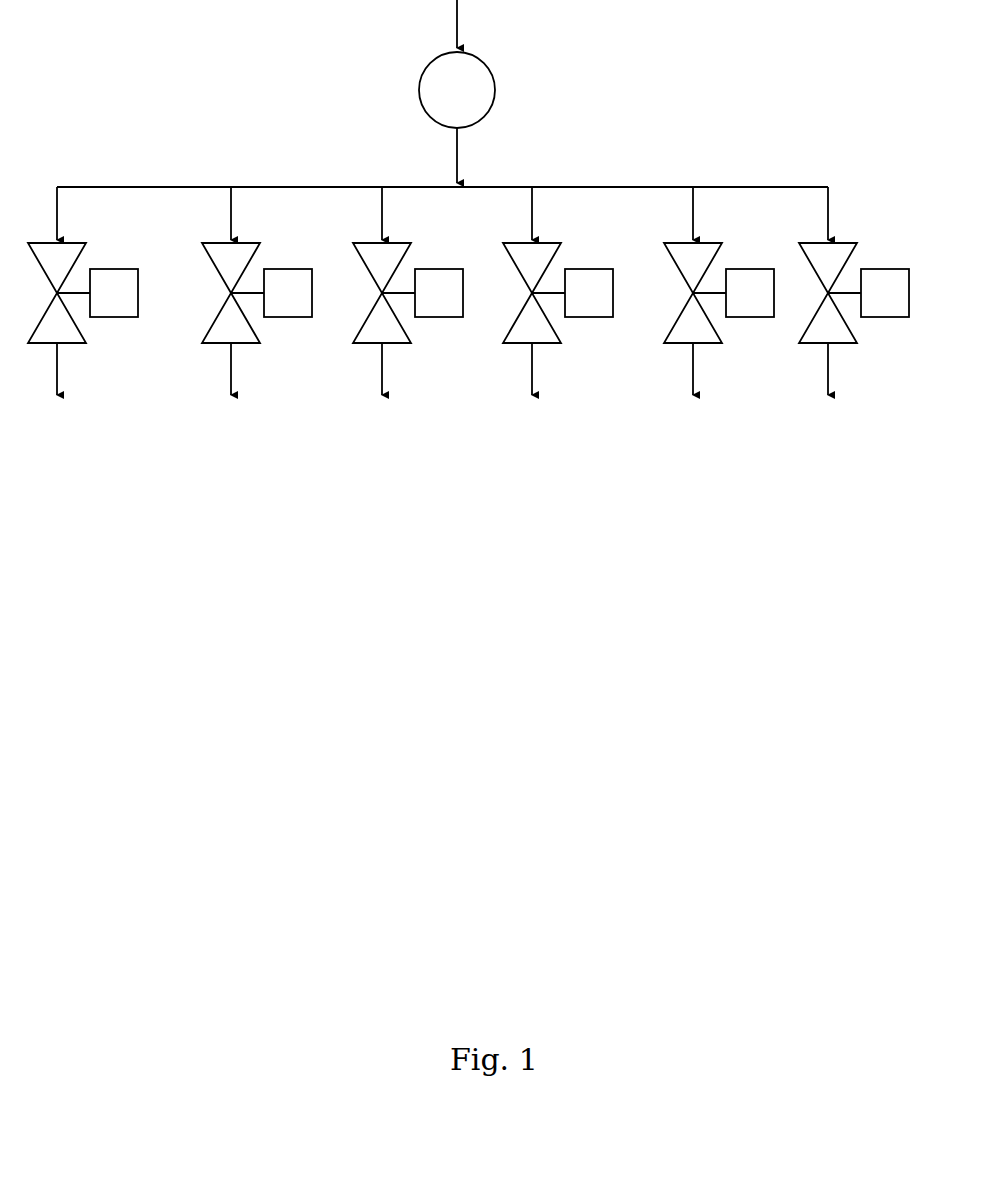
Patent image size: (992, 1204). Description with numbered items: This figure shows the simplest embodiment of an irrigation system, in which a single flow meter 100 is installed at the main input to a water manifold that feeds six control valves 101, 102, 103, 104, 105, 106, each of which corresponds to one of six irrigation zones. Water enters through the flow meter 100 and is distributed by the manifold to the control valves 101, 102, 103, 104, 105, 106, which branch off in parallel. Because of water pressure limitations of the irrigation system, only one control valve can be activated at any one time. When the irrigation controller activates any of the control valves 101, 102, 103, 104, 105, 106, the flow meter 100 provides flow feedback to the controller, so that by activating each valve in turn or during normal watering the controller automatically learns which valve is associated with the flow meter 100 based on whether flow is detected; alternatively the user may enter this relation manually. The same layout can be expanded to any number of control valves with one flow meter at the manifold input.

The flow meter 100 is at (430, 77).
The control valve 101 is at (127, 309).
The control valve 102 is at (284, 312).
The control valve 103 is at (430, 311).
The control valve 104 is at (580, 311).
The control valve 105 is at (740, 311).
The control valve 106 is at (876, 311).